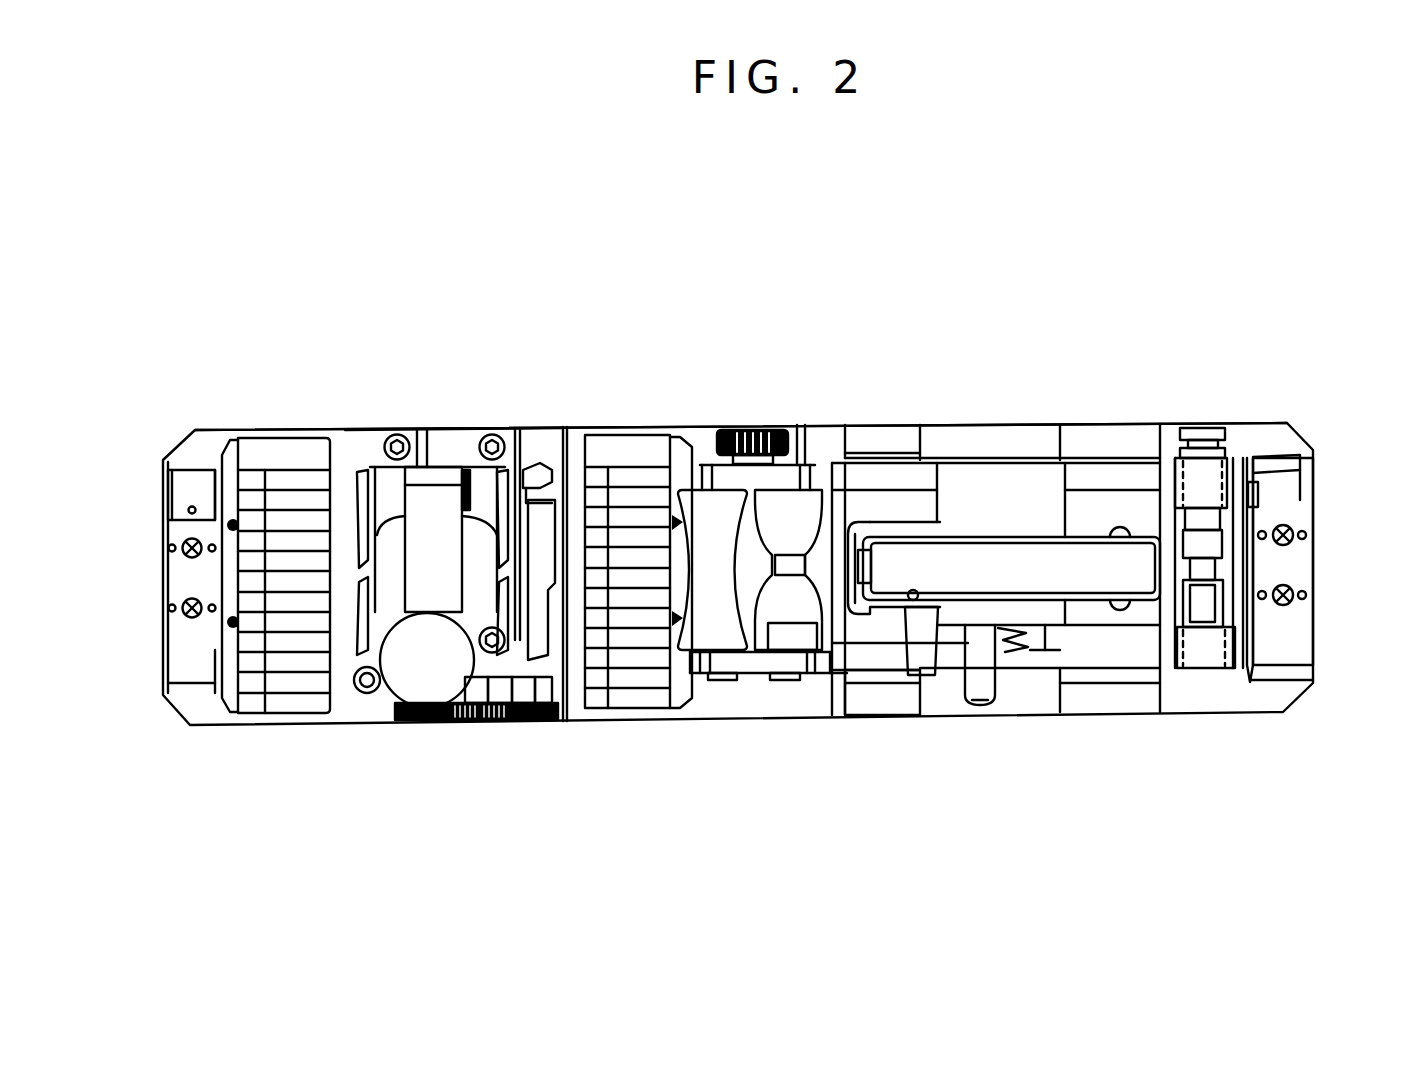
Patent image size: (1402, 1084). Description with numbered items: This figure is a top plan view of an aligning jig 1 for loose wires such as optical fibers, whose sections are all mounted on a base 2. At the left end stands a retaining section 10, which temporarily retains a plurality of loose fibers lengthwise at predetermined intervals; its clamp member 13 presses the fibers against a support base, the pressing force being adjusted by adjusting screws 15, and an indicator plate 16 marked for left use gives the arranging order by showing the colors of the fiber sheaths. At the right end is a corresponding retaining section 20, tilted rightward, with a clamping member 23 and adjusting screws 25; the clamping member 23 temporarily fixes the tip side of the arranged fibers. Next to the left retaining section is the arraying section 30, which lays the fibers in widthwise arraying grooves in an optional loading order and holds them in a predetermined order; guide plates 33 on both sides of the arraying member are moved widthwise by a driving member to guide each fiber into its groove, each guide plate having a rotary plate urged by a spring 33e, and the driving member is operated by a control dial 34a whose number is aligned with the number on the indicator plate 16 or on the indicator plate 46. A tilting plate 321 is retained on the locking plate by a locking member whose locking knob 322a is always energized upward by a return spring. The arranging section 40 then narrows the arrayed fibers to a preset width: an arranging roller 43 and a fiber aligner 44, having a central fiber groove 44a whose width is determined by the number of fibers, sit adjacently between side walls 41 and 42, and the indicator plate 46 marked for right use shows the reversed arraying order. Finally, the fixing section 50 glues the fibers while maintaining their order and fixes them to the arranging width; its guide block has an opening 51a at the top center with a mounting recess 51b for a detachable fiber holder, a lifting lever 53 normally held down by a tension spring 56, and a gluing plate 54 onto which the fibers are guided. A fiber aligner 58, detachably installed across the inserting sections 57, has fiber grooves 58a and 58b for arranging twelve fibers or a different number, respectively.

The aligning jig 1 is at (750, 418).
The base 2 is at (828, 708).
The retaining section 10 is at (200, 465).
The clamp member 13 is at (205, 673).
The adjusting screws 15 is at (182, 604).
The indicator plate 16 is at (262, 452).
The retaining section 20 is at (1273, 692).
The clamping member 23 is at (1300, 640).
The adjusting screws 25 is at (1293, 547).
The arraying section 30 is at (475, 424).
The guide plates 33 is at (352, 495).
The tilting plate 321 is at (443, 500).
The locking knob 322a is at (392, 688).
The spring 33e is at (531, 472).
The control dial 34a is at (478, 721).
The arranging section 40 is at (772, 424).
The side wall 41 is at (763, 669).
The side wall 42 is at (712, 470).
The arranging roller 43 is at (721, 650).
The fiber aligner 44 is at (792, 482).
The fiber groove 44a is at (802, 560).
The indicator plate 46 is at (648, 445).
The fixing section 50 is at (988, 440).
The opening 51a is at (913, 601).
The mounting recess 51b is at (1106, 527).
The lifting lever 53 is at (983, 706).
The gluing plate 54 is at (1120, 583).
The tension spring 56 is at (1032, 637).
The inserting sections 57 is at (1222, 476).
The fiber aligner 58 is at (1230, 608).
The fiber groove 58a is at (1216, 567).
The fiber groove 58b is at (1222, 527).